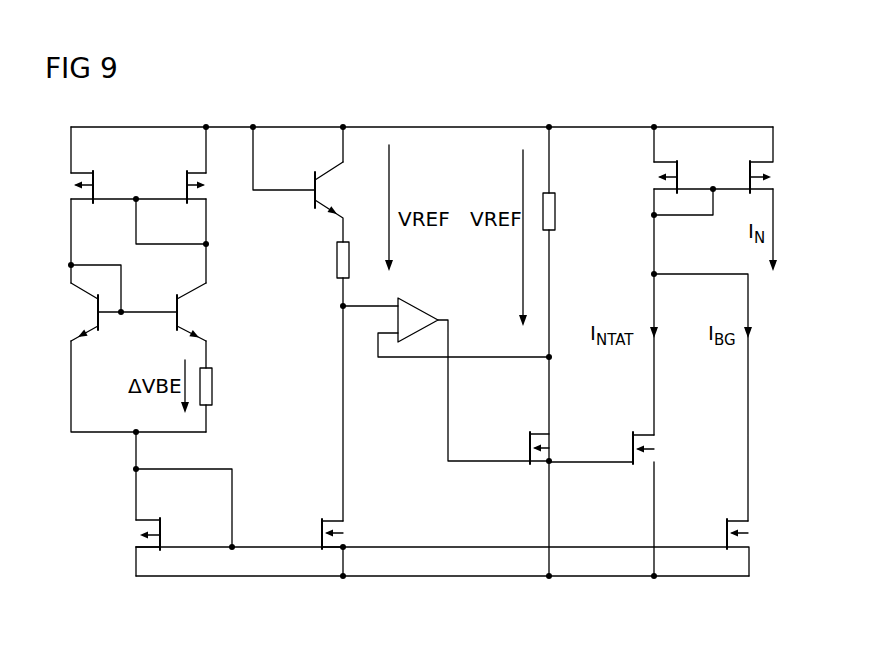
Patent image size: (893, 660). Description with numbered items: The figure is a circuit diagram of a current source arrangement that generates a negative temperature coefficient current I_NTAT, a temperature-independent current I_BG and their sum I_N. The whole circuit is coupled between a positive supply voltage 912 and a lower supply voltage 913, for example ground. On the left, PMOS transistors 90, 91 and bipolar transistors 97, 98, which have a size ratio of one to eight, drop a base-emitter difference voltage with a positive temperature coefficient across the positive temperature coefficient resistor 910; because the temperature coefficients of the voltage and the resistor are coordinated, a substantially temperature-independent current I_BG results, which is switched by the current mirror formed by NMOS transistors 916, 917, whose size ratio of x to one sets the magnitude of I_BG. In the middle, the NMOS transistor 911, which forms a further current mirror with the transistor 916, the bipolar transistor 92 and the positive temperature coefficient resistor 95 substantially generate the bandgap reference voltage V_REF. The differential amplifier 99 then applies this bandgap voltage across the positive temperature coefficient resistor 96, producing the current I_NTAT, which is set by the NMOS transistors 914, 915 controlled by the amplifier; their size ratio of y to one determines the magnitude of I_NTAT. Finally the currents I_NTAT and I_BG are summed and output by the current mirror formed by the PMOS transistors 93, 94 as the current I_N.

The PMOS transistor 90 is at (96, 187).
The PMOS transistor 91 is at (185, 178).
The bipolar transistor 92 is at (313, 182).
The PMOS transistor 93 is at (680, 178).
The PMOS transistor 94 is at (749, 170).
The positive temperature coefficient resistor 95 is at (345, 240).
The positive temperature coefficient resistor 96 is at (550, 192).
The bipolar transistor 97 is at (101, 322).
The bipolar transistor 98 is at (175, 305).
The differential amplifier 99 is at (418, 304).
The positive temperature coefficient resistor 910 is at (207, 410).
The NMOS transistor 911 is at (320, 533).
The positive supply voltage 912 is at (440, 127).
The lower supply voltage 913 is at (441, 576).
The NMOS transistor 914 is at (528, 449).
The NMOS transistor 915 is at (631, 445).
The NMOS transistor 916 is at (164, 536).
The NMOS transistor 917 is at (725, 533).